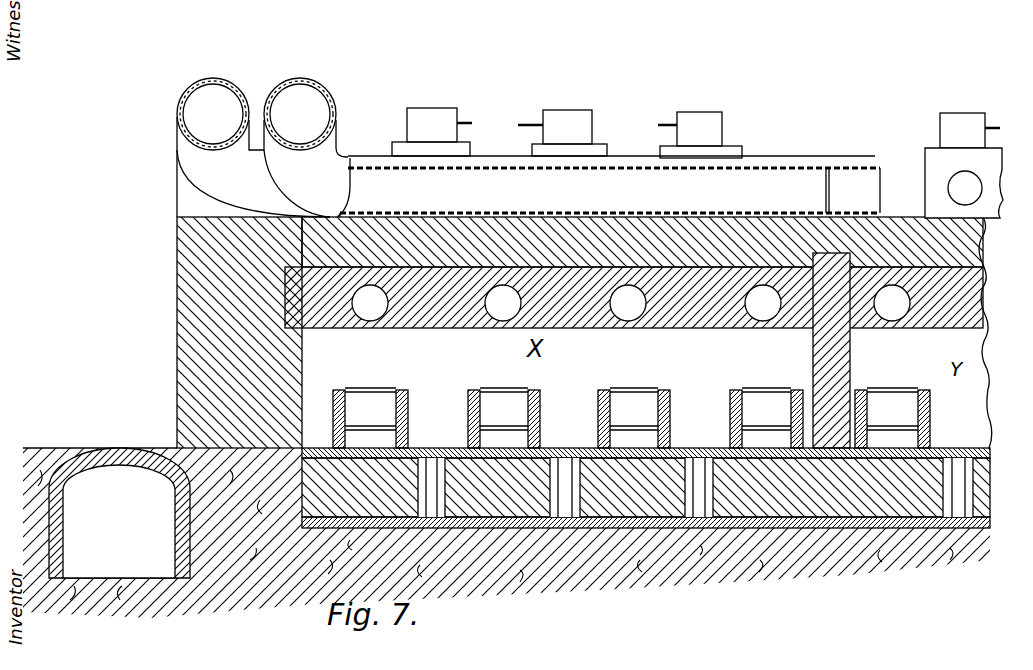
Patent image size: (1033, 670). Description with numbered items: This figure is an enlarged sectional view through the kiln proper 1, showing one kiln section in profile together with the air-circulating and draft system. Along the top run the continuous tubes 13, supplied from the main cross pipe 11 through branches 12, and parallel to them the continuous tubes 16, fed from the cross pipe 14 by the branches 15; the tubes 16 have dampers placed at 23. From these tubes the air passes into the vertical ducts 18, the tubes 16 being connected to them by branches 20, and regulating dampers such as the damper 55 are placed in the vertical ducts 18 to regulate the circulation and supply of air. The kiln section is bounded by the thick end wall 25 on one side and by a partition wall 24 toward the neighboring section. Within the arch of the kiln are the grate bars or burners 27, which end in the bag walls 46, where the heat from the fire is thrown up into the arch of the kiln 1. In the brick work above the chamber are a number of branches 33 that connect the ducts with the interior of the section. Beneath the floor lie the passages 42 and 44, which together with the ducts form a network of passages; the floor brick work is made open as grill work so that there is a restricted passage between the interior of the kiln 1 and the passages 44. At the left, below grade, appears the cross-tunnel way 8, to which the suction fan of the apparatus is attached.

The kiln proper 1 is at (558, 270).
The cross-tunnel way 8 is at (100, 478).
The main cross pipe 11 is at (177, 118).
The branches 12 is at (193, 167).
The continuous tubes 13 is at (270, 196).
The cross pipe 14 is at (318, 105).
The branches 15 is at (323, 151).
The continuous tubes 16 is at (355, 175).
The vertical ducts 18 is at (430, 108).
The branches 20 is at (950, 180).
The dampers 23 is at (830, 175).
The walls 24 is at (835, 366).
The end wall 25 is at (200, 347).
The grate bars or burners 27 is at (383, 423).
The branches 33 is at (385, 321).
The passages 42 is at (605, 522).
The passages 44 is at (567, 522).
The bag walls 46 is at (598, 388).
The regulating damper 55 is at (470, 123).